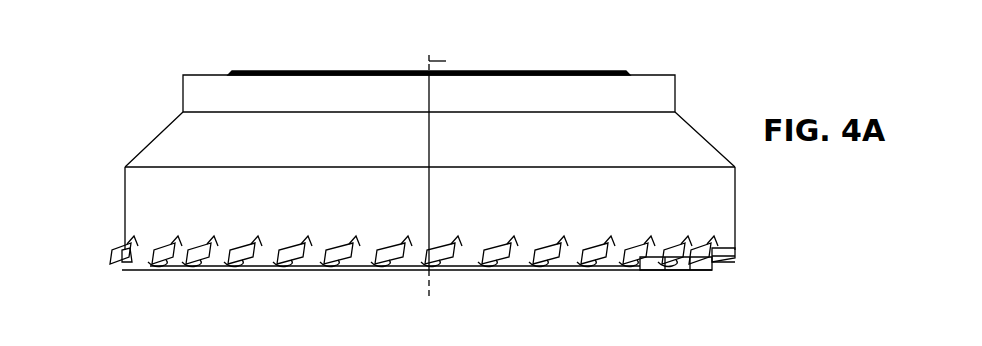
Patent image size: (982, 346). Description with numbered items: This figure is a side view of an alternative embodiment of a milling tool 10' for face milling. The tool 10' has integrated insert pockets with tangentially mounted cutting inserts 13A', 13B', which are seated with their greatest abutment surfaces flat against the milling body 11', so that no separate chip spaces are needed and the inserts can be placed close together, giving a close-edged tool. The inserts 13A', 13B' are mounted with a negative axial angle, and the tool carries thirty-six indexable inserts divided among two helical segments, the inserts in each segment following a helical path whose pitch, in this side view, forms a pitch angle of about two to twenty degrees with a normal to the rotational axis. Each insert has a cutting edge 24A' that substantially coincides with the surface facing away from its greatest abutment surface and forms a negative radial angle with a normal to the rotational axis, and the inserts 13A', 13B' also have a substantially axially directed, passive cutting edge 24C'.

The milling tool 10' is at (457, 181).
The tool body 11' is at (428, 170).
The cutting insert 13A' is at (456, 257).
The cutting insert 13B' is at (417, 284).
The cutting edge 24A' is at (710, 282).
The passive cutting edge 24C' is at (765, 254).